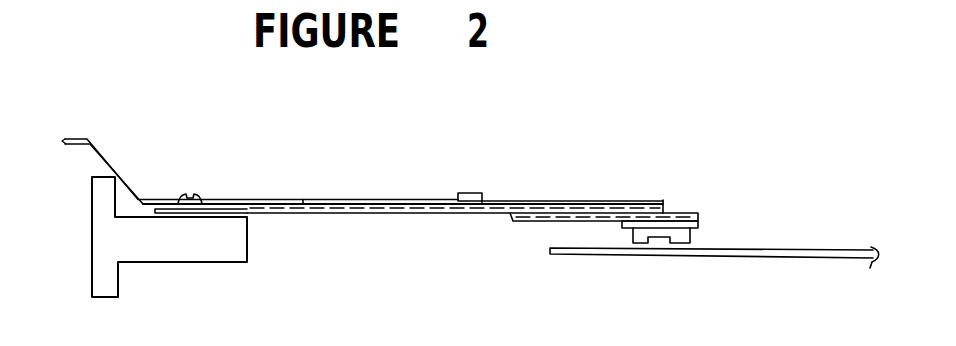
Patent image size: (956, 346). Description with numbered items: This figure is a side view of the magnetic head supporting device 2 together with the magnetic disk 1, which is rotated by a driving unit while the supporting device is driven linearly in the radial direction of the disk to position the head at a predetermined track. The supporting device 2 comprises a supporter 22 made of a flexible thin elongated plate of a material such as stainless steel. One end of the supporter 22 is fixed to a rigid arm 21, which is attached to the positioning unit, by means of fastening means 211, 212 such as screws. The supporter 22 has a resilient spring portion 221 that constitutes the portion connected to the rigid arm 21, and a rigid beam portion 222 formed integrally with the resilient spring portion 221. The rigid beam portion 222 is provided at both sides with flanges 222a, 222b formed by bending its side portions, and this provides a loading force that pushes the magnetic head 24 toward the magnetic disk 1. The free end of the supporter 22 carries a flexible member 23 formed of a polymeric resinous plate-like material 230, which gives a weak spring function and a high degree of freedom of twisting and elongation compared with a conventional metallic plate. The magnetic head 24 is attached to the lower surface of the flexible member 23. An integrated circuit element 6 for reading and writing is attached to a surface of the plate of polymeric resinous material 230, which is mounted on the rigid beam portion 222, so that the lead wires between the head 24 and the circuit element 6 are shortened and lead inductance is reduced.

The magnetic disk 1 is at (813, 250).
The magnetic head supporting device 2 is at (302, 158).
The integrated circuit element 6 is at (484, 201).
The rigid arm 21 is at (178, 254).
The supporter 22 is at (494, 185).
The flexible member 23 is at (676, 208).
The magnetic head 24 is at (697, 237).
The fastening means 211 is at (190, 162).
The fastening means 212 is at (182, 194).
The resilient spring portion 221 is at (287, 217).
The rigid beam portion 222 is at (463, 215).
The flange 222a is at (483, 162).
The flange 222b is at (405, 201).
The polymeric resinous plate-like material 230 is at (78, 140).